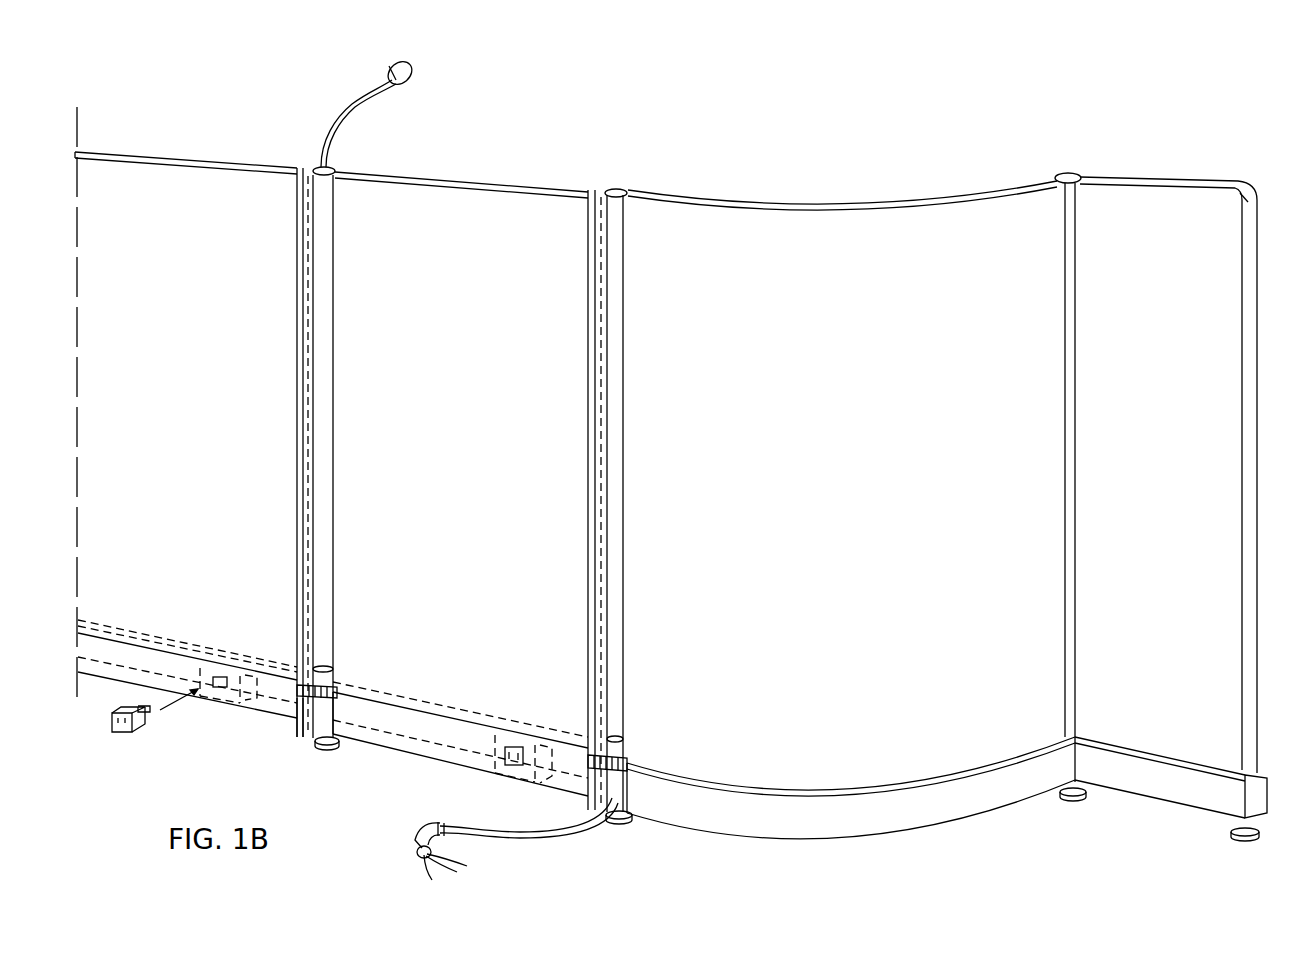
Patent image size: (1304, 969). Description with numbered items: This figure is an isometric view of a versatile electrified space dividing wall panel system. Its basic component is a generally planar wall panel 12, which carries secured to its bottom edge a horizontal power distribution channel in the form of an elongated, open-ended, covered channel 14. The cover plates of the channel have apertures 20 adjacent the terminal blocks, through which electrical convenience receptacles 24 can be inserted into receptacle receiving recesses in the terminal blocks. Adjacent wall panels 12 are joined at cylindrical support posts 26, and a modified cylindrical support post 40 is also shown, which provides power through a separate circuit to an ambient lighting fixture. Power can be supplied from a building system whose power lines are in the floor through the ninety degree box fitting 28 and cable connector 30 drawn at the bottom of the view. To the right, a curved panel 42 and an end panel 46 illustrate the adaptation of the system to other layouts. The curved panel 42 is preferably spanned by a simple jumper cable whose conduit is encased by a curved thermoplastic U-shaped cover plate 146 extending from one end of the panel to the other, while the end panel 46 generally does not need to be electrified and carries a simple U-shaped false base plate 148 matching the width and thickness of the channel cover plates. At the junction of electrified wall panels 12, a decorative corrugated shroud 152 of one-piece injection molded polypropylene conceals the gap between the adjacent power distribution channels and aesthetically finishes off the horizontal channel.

The wall panel 12 is at (168, 174).
The covered channel 14 is at (255, 713).
The apertures 20 is at (220, 689).
The electrical convenience receptacles 24 is at (512, 768).
The connector post 26 is at (613, 213).
The 90 degree box fitting 28 is at (438, 846).
The cable connector 30 is at (563, 818).
The modified cylindrical support post 40 is at (320, 193).
The curved panel 42 is at (777, 390).
The end panel 46 is at (1157, 396).
The curved thermoplastic U-shaped cover plate 146 is at (970, 808).
The U-shaped false base plate 148 is at (1153, 789).
The decorative corrugated shroud 152 is at (307, 723).